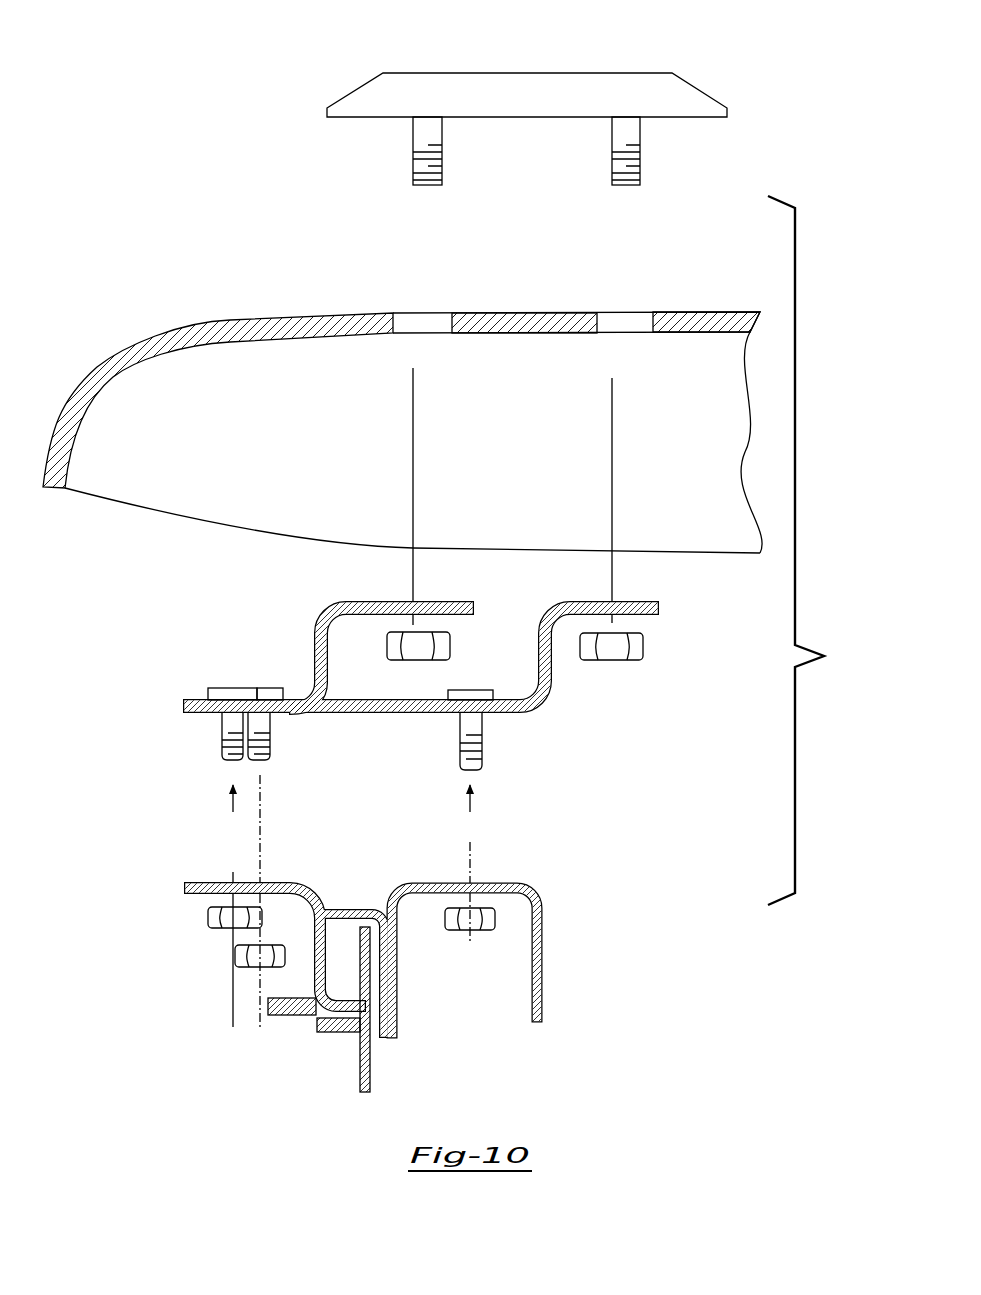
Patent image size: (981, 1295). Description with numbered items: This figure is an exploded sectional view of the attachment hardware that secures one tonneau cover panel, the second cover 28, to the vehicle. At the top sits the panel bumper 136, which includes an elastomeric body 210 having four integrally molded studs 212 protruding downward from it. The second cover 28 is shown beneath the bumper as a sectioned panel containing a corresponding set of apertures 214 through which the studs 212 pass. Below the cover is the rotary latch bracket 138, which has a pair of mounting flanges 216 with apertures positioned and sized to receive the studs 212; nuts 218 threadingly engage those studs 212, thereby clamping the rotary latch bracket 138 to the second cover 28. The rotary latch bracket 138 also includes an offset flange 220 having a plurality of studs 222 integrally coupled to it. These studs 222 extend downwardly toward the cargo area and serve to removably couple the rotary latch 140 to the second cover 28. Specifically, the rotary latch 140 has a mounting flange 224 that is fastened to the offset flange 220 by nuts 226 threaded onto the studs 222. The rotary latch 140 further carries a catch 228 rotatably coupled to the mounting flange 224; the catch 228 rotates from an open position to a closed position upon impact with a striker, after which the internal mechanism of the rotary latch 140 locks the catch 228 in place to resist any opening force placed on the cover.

The second cover 28 is at (402, 410).
The panel bumper 136 is at (494, 95).
The rotary latch bracket 138 is at (435, 674).
The rotary latch 140 is at (335, 973).
The elastomeric body 210 is at (558, 84).
The studs 212 is at (612, 163).
The apertures 214 is at (653, 322).
The mounting flanges 216 is at (360, 602).
The nuts 218 is at (387, 645).
The offset flange 220 is at (380, 716).
The studs 222 is at (222, 748).
The mounting flange 224 is at (290, 883).
The nuts 226 is at (208, 917).
The catch 228 is at (360, 1077).